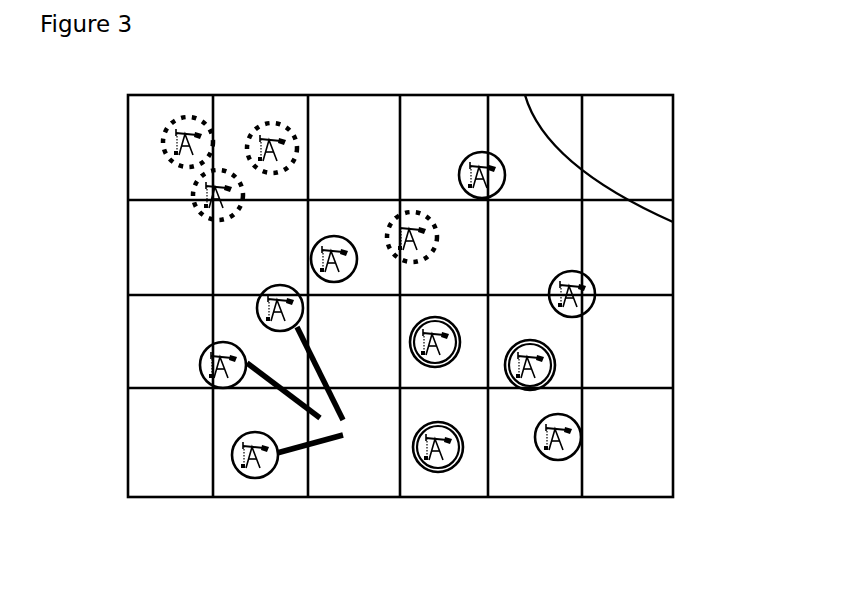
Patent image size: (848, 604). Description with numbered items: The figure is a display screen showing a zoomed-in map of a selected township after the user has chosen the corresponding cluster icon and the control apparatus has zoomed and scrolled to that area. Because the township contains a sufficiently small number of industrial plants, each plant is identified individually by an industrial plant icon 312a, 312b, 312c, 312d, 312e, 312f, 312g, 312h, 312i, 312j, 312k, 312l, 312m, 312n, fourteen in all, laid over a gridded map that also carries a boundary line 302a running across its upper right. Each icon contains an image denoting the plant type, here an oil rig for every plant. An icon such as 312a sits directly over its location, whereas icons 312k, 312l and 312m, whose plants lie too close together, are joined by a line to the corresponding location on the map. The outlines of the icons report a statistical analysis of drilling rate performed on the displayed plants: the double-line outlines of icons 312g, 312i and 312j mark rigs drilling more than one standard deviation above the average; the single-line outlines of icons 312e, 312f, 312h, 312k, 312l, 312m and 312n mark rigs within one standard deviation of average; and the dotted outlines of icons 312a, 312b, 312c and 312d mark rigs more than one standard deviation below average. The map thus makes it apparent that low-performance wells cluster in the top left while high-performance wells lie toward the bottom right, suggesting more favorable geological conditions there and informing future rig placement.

The boundary/fault line 302a is at (600, 150).
The industrial plant icon 312a is at (203, 122).
The industrial plant icon 312b is at (218, 170).
The industrial plant icon 312c is at (293, 142).
The industrial plant icon 312d is at (413, 213).
The industrial plant icon 312e is at (483, 153).
The industrial plant icon 312f is at (590, 312).
The industrial plant icon 312g is at (555, 365).
The industrial plant icon 312h is at (583, 437).
The industrial plant icon 312i is at (455, 358).
The industrial plant icon 312j is at (455, 465).
The industrial plant icon 312k is at (232, 457).
The industrial plant icon 312l is at (200, 366).
The industrial plant icon 312m is at (258, 305).
The industrial plant icon 312n is at (312, 258).